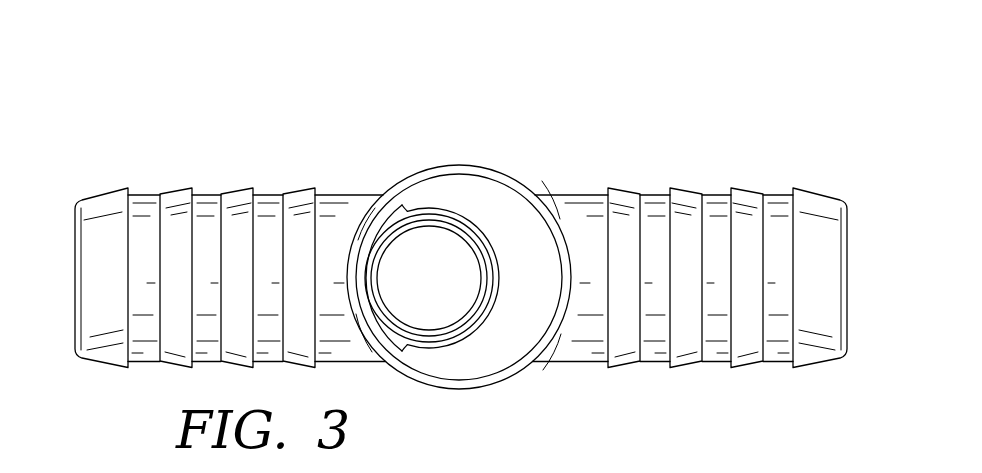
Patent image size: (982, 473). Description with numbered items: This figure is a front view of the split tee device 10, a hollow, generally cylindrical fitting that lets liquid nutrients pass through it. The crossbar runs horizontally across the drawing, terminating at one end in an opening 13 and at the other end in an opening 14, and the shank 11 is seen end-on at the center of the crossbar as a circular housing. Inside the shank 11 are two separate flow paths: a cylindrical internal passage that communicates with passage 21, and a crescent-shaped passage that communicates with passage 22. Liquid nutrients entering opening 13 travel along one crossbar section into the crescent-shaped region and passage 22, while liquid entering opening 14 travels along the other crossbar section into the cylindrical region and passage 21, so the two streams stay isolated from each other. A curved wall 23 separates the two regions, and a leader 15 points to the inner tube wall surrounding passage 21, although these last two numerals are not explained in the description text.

The split tee device 10 is at (266, 165).
The shank 11 is at (525, 178).
The opening 13 is at (847, 228).
The opening 14 is at (75, 228).
The inner tube wall 15 is at (487, 324).
The passage 21 is at (412, 293).
The passage 22 is at (548, 293).
The partition wall 23 is at (477, 224).